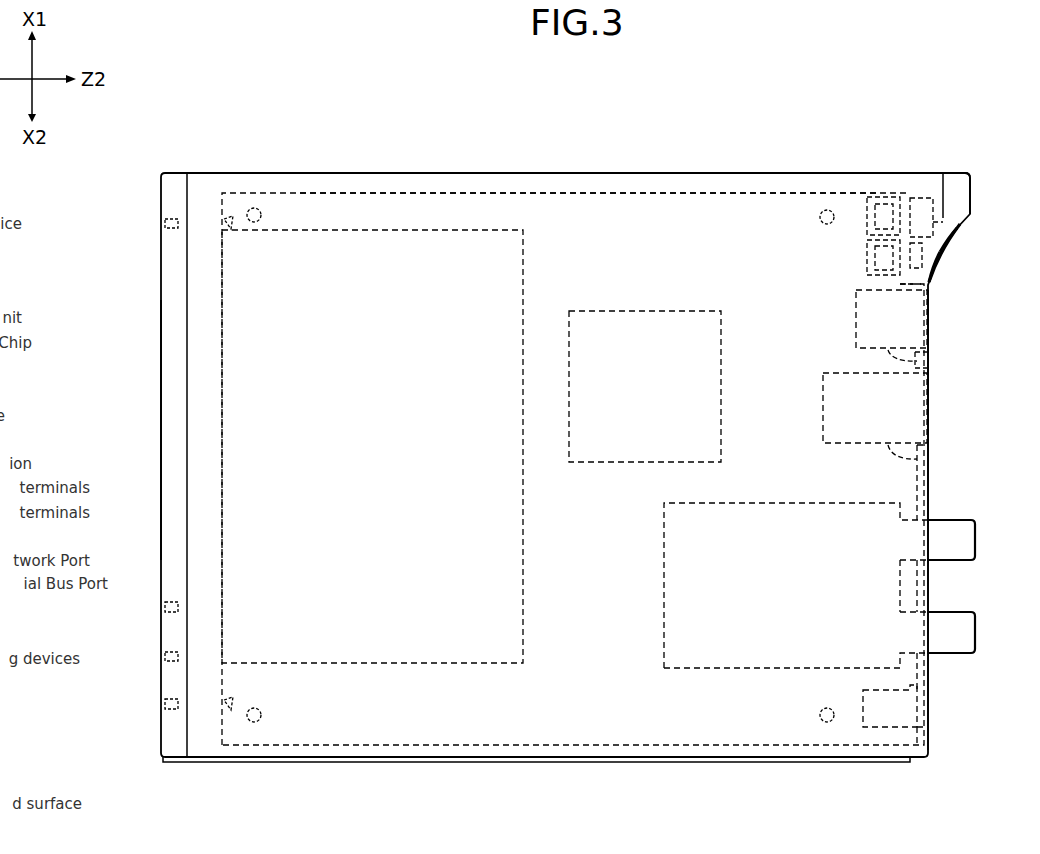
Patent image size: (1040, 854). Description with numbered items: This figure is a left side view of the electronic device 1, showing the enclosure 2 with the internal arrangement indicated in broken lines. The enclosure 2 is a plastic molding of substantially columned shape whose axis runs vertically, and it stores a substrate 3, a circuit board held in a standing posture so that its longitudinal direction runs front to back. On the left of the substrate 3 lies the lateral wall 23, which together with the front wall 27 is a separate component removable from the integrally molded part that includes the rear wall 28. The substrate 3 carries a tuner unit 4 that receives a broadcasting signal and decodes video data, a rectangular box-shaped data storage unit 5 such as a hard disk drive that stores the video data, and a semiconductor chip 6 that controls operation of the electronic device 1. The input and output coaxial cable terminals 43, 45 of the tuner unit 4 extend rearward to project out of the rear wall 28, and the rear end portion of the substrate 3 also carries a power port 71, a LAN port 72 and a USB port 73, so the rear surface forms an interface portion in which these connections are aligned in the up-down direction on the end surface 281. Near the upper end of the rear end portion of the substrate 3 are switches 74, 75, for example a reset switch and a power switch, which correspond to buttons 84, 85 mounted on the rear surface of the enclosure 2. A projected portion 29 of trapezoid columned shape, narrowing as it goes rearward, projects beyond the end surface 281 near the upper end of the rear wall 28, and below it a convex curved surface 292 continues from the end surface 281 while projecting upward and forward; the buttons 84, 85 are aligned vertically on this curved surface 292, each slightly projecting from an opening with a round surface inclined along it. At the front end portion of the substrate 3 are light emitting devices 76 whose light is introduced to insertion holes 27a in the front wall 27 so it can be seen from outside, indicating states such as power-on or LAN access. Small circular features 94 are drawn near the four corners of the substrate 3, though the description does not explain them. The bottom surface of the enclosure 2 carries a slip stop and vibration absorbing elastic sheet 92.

The electronic device 1 is at (343, 80).
The enclosure 2 is at (551, 150).
The substrate 3 is at (613, 193).
The tuner unit 4 is at (745, 668).
The data storage unit 5 is at (368, 230).
The semiconductor chip 6 is at (688, 311).
The lateral wall 23 is at (465, 210).
The front wall 27 is at (170, 428).
The insertion hole 27a is at (165, 224).
The rear wall 28 is at (936, 410).
The projected portion 29 is at (970, 189).
The input coaxial cable terminal 43 is at (976, 539).
The output coaxial cable terminal 45 is at (976, 632).
The power port 71 is at (877, 728).
The LAN port 72 is at (920, 460).
The USB port 73 is at (920, 361).
The switch 74 is at (872, 253).
The switch 75 is at (880, 197).
The light emitting device 76 is at (224, 224).
The button 84 is at (931, 266).
The button 85 is at (957, 232).
The elastic sheet 92 is at (585, 763).
The screw hole 94 is at (255, 208).
The end surface 281 is at (930, 321).
The convex curved surface 292 is at (948, 240).